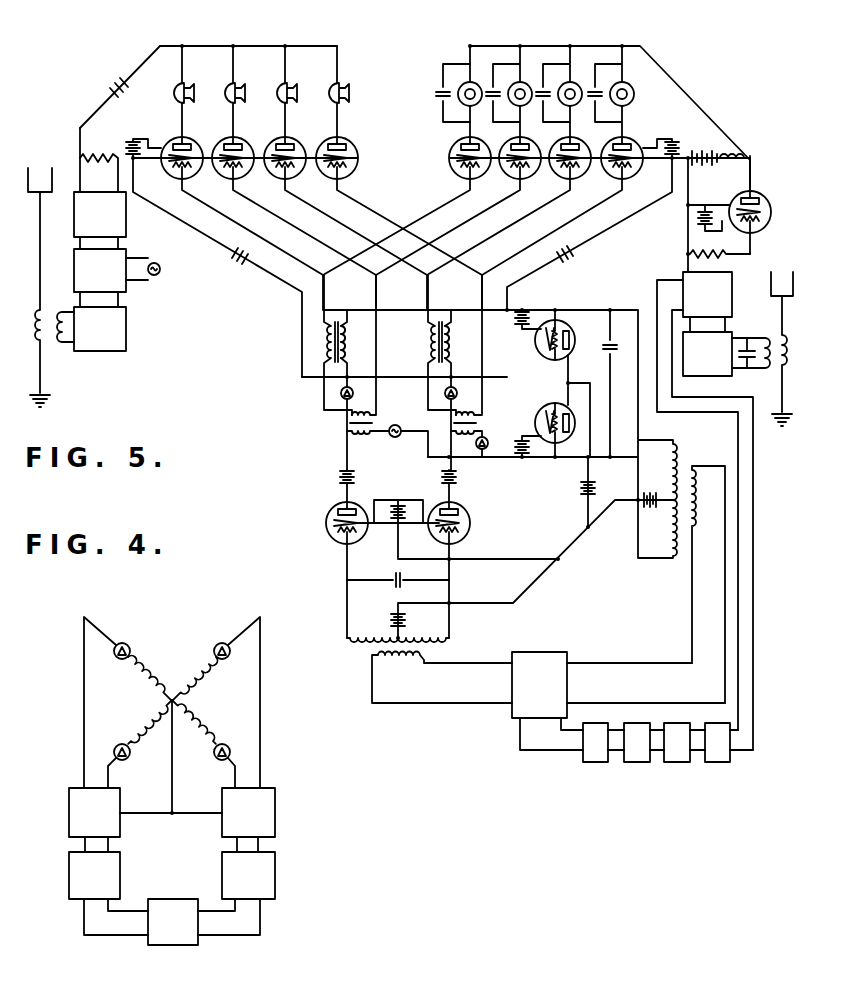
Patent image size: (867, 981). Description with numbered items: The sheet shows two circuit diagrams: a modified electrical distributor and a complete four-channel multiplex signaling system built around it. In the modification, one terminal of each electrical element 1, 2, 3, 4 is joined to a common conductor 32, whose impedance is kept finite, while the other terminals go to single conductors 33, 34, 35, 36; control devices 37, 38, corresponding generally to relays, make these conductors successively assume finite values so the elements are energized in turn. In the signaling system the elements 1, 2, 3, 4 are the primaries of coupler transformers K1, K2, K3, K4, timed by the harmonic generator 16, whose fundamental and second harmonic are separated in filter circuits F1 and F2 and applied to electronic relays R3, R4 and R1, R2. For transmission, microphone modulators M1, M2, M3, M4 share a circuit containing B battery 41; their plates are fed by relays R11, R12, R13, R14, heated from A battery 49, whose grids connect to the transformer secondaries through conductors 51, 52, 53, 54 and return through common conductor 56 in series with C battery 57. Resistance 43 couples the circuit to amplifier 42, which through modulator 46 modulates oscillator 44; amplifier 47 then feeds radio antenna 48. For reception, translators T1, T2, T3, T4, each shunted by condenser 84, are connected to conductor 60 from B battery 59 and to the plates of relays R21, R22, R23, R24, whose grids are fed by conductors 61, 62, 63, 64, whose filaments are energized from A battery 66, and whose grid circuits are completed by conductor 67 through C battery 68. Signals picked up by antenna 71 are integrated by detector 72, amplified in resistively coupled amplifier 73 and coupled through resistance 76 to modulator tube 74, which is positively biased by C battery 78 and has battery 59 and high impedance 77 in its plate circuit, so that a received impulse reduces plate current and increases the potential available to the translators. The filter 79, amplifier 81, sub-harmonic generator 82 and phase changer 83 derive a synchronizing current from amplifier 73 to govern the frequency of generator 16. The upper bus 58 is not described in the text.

In FIG. 5, the microphone bus conductor 58 is at (258, 46).
In FIG. 5, the conductor 60 is at (602, 46).
In FIG. 5, the B battery 41 is at (122, 82).
In FIG. 5, the condenser 84 is at (440, 92).
In FIG. 5, the modulating device M3 is at (180, 83).
In FIG. 5, the modulating device M1 is at (231, 83).
In FIG. 5, the modulating device M4 is at (283, 83).
In FIG. 5, the modulating device M2 is at (334, 83).
In FIG. 5, the translator T2 is at (465, 91).
In FIG. 5, the translator T4 is at (509, 91).
In FIG. 5, the translator T1 is at (559, 91).
In FIG. 5, the translator T3 is at (634, 90).
In FIG. 5, the resistance 43 is at (100, 157).
In FIG. 5, the A battery 49 is at (132, 142).
In FIG. 5, the A battery 66 is at (671, 142).
In FIG. 5, the B battery 59 is at (715, 149).
In FIG. 5, the impedance 77 is at (753, 168).
In FIG. 5, the radio antenna 48 is at (34, 196).
In FIG. 5, the amplifier 42 is at (126, 212).
In FIG. 5, the modulator 46 is at (122, 250).
In FIG. 5, the oscillator 44 is at (161, 270).
In FIG. 5, the amplifier 47 is at (126, 324).
In FIG. 5, the electron relay R13 is at (190, 170).
In FIG. 5, the electron relay R11 is at (242, 170).
In FIG. 5, the electron relay R14 is at (294, 170).
In FIG. 5, the electron relay R12 is at (346, 170).
In FIG. 5, the electron relay R23 is at (478, 170).
In FIG. 5, the electron relay R21 is at (528, 170).
In FIG. 5, the electron relay R24 is at (579, 170).
In FIG. 5, the electron relay R22 is at (630, 170).
In FIG. 5, the common return conductor 56 is at (176, 218).
In FIG. 5, the conductor 53 is at (228, 218).
In FIG. 5, the conductor 51 is at (281, 218).
In FIG. 5, the conductor 54 is at (331, 218).
In FIG. 5, the conductor 52 is at (381, 218).
In FIG. 5, the conductor 63 is at (431, 218).
In FIG. 5, the conductor 61 is at (483, 218).
In FIG. 5, the conductor 64 is at (536, 218).
In FIG. 5, the conductor 62 is at (589, 218).
In FIG. 5, the conductor 67 is at (641, 218).
In FIG. 5, the C battery 57 is at (243, 261).
In FIG. 5, the C battery 68 is at (578, 250).
In FIG. 5, the C battery 78 is at (686, 233).
In FIG. 5, the modulator tube 74 is at (771, 214).
In FIG. 5, the resistance 76 is at (686, 256).
In FIG. 5, the amplifier 73 is at (733, 293).
In FIG. 5, the antenna 71 is at (781, 315).
In FIG. 5, the detector 72 is at (702, 376).
In FIG. 5, the coupler transformer K3 is at (337, 320).
In FIG. 5, the coupler transformer K4 is at (441, 320).
In FIG. 5, the electrical element 3 is at (352, 345).
In FIG. 4, the electrical element 3 is at (140, 684).
In FIG. 5, the electrical element 4 is at (456, 345).
In FIG. 4, the electrical element 4 is at (152, 722).
In FIG. 5, the relay R4 is at (545, 357).
In FIG. 5, the relay R3 is at (548, 410).
In FIG. 5, the electrical element 1 is at (354, 410).
In FIG. 4, the electrical element 1 is at (200, 719).
In FIG. 5, the electrical element 2 is at (456, 422).
In FIG. 4, the electrical element 2 is at (194, 672).
In FIG. 5, the coupler transformer K1 is at (376, 433).
In FIG. 5, the coupler transformer K2 is at (480, 424).
In FIG. 5, the relay R1 is at (328, 514).
In FIG. 5, the relay R2 is at (470, 506).
In FIG. 5, the filter circuit F1 is at (684, 555).
In FIG. 4, the filter circuit F1 is at (236, 893).
In FIG. 5, the filter circuit F2 is at (445, 653).
In FIG. 4, the filter circuit F2 is at (108, 893).
In FIG. 5, the harmonic generator 16 is at (570, 681).
In FIG. 4, the harmonic generator 16 is at (180, 947).
In FIG. 5, the phase changer 83 is at (594, 762).
In FIG. 5, the sub-harmonic generator 82 is at (638, 762).
In FIG. 5, the amplifier 81 is at (677, 762).
In FIG. 5, the filter 79 is at (719, 762).
In FIG. 4, the single conductor 33 is at (84, 672).
In FIG. 4, the single conductor 36 is at (260, 672).
In FIG. 4, the common conductor 32 is at (172, 760).
In FIG. 4, the single conductor 34 is at (110, 777).
In FIG. 4, the single conductor 35 is at (234, 777).
In FIG. 4, the control device 37 is at (69, 813).
In FIG. 4, the control device 38 is at (275, 813).